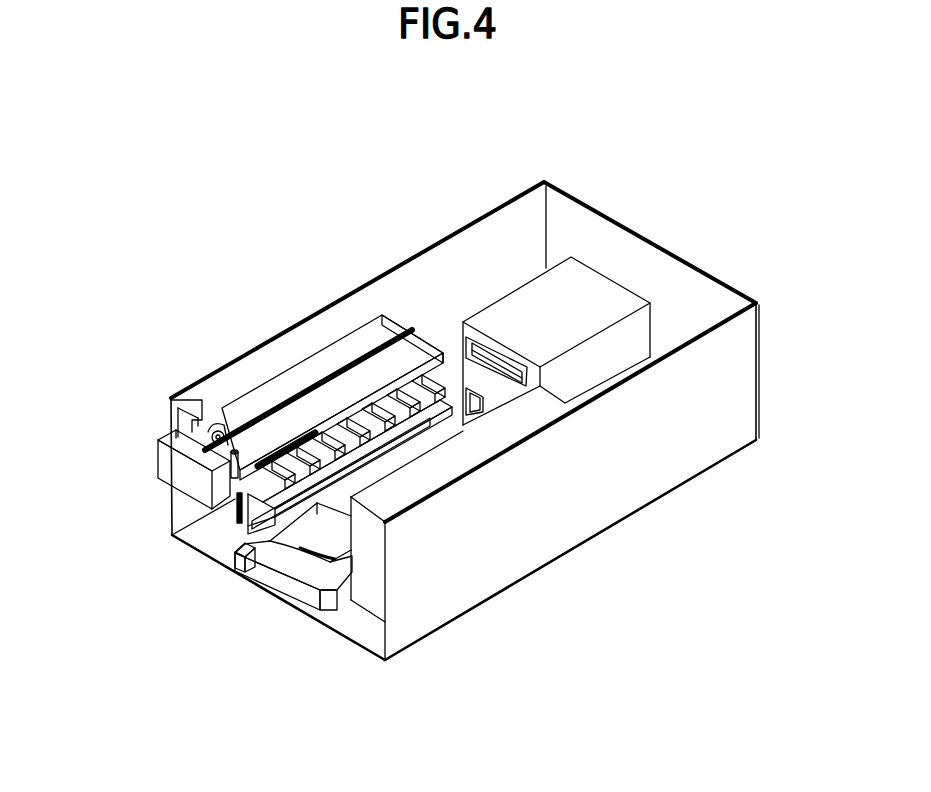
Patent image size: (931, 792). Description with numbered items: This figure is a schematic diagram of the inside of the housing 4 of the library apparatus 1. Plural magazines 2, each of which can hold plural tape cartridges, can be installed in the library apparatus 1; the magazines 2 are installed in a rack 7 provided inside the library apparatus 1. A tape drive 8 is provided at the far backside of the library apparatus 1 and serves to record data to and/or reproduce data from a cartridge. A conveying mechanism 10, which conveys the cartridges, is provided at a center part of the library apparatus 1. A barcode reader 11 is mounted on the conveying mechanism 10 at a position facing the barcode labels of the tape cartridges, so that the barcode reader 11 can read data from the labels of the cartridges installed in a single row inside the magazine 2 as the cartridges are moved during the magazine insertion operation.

The library apparatus 1 is at (458, 226).
The magazine 2 is at (279, 386).
The housing 4 is at (560, 506).
The rack 7 is at (199, 420).
The tape drive 8 is at (580, 291).
The conveying mechanism 10 is at (280, 557).
The barcode reader 11 is at (230, 568).